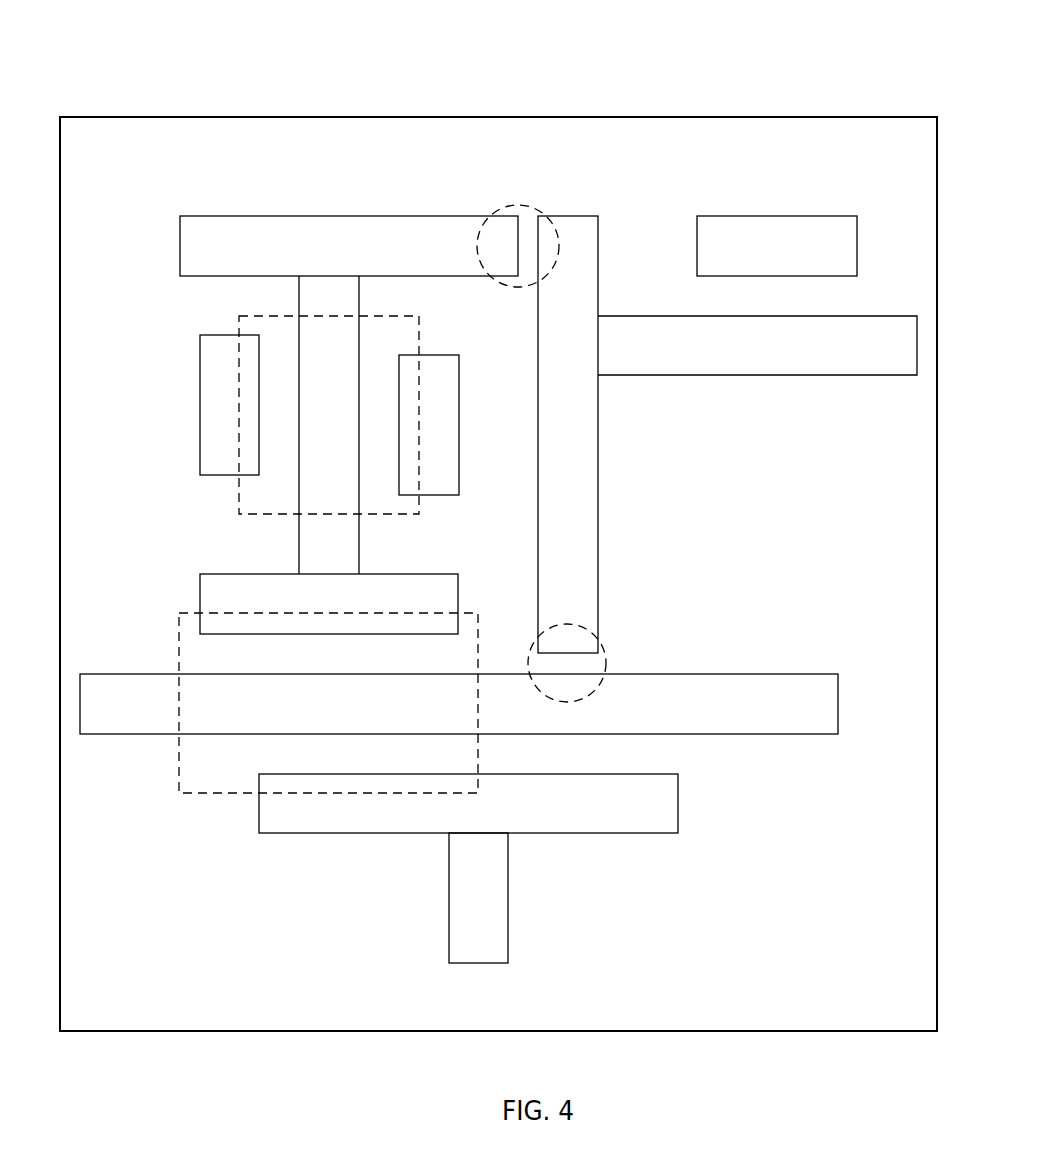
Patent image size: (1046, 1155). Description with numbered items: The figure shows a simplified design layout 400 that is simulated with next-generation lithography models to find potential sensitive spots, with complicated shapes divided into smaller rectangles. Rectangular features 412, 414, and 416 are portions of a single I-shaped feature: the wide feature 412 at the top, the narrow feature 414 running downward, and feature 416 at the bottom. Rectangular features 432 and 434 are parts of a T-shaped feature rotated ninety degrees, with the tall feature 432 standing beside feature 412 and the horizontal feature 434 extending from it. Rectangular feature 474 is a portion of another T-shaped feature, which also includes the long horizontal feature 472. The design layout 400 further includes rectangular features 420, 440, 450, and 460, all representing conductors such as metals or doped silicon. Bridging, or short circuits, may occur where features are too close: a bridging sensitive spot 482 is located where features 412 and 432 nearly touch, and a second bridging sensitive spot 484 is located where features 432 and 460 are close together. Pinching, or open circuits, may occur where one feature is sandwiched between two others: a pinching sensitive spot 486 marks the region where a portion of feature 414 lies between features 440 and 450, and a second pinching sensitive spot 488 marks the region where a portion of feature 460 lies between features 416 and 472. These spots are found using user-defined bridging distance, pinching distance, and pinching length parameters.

The design layout 400 is at (418, 77).
The rectangular feature 412 is at (370, 257).
The rectangular feature 414 is at (329, 425).
The rectangular feature 416 is at (349, 600).
The rectangular feature 420 is at (799, 259).
The rectangular feature 432 is at (589, 446).
The rectangular feature 434 is at (779, 358).
The rectangular feature 440 is at (200, 475).
The rectangular feature 450 is at (458, 355).
The rectangular feature 460 is at (132, 716).
The rectangular feature 472 is at (667, 816).
The rectangular feature 474 is at (499, 909).
The bridging sensitive spot 482 is at (520, 205).
The second bridging sensitive spot 484 is at (607, 657).
The pinching sensitive spot 486 is at (239, 514).
The second pinching sensitive spot 488 is at (500, 593).